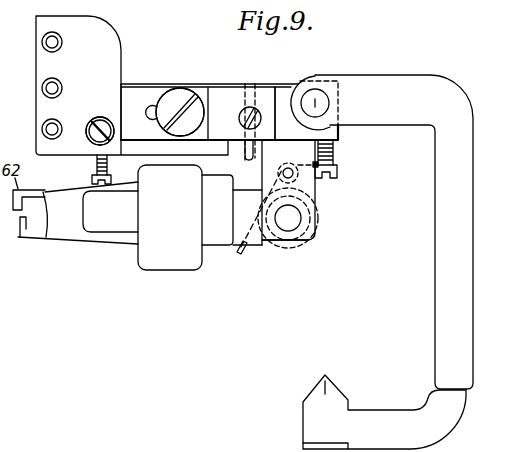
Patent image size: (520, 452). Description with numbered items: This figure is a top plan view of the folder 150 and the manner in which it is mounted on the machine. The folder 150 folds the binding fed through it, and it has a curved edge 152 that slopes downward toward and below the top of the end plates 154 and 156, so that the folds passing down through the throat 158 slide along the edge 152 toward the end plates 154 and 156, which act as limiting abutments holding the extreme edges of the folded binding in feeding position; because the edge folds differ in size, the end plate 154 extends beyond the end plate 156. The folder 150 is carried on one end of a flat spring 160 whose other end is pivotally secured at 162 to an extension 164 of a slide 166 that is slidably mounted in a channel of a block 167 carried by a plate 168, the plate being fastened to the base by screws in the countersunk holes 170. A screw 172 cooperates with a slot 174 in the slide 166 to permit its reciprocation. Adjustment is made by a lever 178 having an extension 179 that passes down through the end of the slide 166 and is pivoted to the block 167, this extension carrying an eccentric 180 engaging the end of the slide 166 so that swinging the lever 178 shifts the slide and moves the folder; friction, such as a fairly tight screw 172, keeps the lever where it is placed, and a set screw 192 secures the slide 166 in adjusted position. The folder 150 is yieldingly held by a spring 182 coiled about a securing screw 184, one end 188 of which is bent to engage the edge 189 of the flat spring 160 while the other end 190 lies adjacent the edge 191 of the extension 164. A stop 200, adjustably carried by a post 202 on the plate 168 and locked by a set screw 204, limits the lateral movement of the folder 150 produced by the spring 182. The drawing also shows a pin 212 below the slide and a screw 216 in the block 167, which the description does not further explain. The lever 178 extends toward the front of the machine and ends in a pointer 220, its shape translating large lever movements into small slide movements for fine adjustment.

The folder 150 is at (164, 273).
The curved edge 152 is at (50, 214).
The end plate 154 is at (17, 193).
The end plate 156 is at (18, 239).
The throat 158 is at (38, 226).
The flat spring 160 is at (290, 242).
The pivot 162 is at (290, 219).
The extension 164 is at (309, 191).
The slide 166 is at (280, 91).
The block 167 is at (173, 83).
The plate 168 is at (106, 32).
The countersunk holes 170 is at (46, 47).
The screw 172 is at (183, 98).
The slot 174 is at (150, 104).
The lever 178 is at (424, 80).
The extension 179 is at (311, 105).
The eccentric 180 is at (333, 109).
The spring 182 is at (259, 250).
The securing screw 184 is at (282, 171).
The spring end 188 is at (241, 255).
The edge 189 is at (227, 248).
The spring end 190 is at (335, 153).
The edge 191 is at (312, 209).
The set screw 192 is at (338, 173).
The stop 200 is at (96, 173).
The post 202 is at (92, 126).
The set screw 204 is at (88, 137).
The pin 212 is at (254, 152).
The screw 216 is at (243, 118).
The pointer 220 is at (305, 419).